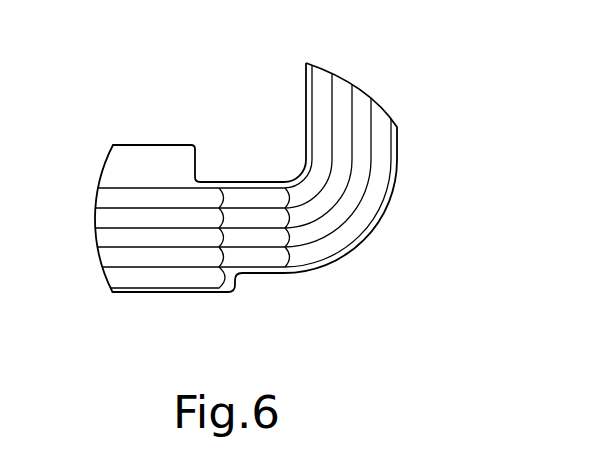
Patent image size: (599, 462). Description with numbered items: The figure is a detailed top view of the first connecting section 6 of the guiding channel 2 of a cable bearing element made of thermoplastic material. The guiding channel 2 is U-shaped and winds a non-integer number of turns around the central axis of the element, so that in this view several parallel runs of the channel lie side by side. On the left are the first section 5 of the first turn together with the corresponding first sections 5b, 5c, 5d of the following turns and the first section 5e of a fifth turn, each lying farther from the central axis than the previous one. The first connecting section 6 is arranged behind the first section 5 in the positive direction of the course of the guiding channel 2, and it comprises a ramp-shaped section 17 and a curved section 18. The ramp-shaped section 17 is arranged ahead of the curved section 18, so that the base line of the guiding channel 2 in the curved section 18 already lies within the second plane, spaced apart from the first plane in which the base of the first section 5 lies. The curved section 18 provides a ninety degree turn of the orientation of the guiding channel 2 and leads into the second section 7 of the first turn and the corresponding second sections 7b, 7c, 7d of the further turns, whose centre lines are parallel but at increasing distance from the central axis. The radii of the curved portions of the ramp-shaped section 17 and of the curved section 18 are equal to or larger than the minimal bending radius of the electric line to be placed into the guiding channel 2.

The guiding channel 2 is at (175, 198).
The first section 5 is at (135, 202).
The first section of second turn 5b is at (115, 224).
The first section of third turn 5c is at (103, 242).
The first section of fourth turn 5d is at (128, 262).
The first section of fifth turn 5e is at (150, 282).
The first connecting section 6 is at (357, 248).
The second section 7 is at (320, 105).
The second section of second turn 7b is at (338, 102).
The second section of third turn 7c is at (360, 127).
The second section of fourth turn 7d is at (382, 142).
The ramp-shaped section 17 is at (260, 262).
The curved section 18 is at (333, 248).